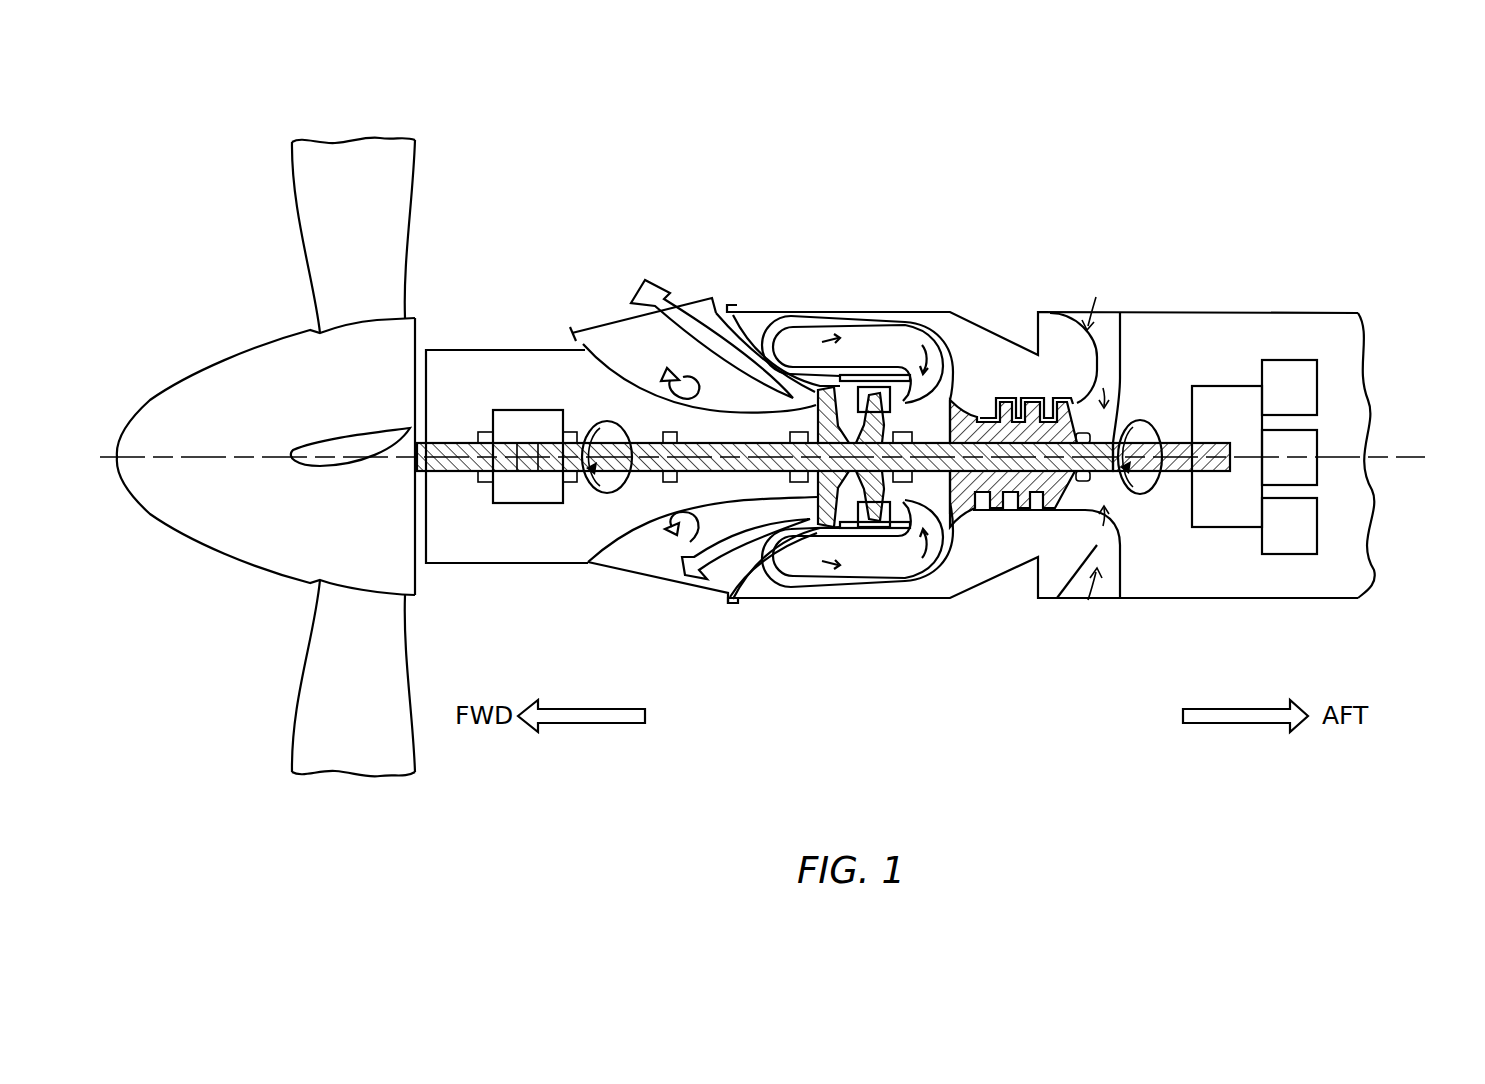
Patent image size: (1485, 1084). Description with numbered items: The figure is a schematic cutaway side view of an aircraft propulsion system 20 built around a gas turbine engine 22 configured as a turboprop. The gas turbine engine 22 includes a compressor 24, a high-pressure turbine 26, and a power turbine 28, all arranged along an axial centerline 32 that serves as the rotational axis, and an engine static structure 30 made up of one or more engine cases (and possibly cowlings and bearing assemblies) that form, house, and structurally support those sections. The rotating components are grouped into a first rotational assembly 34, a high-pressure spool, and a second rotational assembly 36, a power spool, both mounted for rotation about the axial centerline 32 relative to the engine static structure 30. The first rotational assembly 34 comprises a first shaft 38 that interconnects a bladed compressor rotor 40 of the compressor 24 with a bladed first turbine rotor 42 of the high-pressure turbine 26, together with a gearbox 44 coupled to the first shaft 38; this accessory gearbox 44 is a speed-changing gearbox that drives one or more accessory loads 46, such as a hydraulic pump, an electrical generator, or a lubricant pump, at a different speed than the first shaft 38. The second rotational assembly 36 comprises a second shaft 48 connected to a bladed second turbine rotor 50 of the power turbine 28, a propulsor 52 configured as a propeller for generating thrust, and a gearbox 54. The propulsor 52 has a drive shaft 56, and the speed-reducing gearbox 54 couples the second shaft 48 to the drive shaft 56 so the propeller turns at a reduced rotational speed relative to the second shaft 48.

The aircraft propulsion system 20 is at (1232, 182).
The gas turbine engine 22 is at (975, 273).
The compressor 24 is at (1013, 510).
The high-pressure turbine 26 is at (888, 494).
The power turbine 28 is at (809, 518).
The engine static structure 30 is at (795, 318).
The axial centerline 32 is at (1415, 462).
The first rotational assembly 34 is at (1153, 512).
The second rotational assembly 36 is at (648, 486).
The first shaft 38 is at (1182, 443).
The bladed compressor rotor 40 is at (965, 474).
The bladed first turbine rotor 42 is at (893, 385).
The gearbox 44 is at (1200, 527).
The accessory loads 46 is at (1305, 392).
The second shaft 48 is at (738, 443).
The bladed second turbine rotor 50 is at (838, 490).
The propulsor 52 is at (218, 555).
The gearbox 54 is at (535, 503).
The drive shaft 56 is at (458, 443).